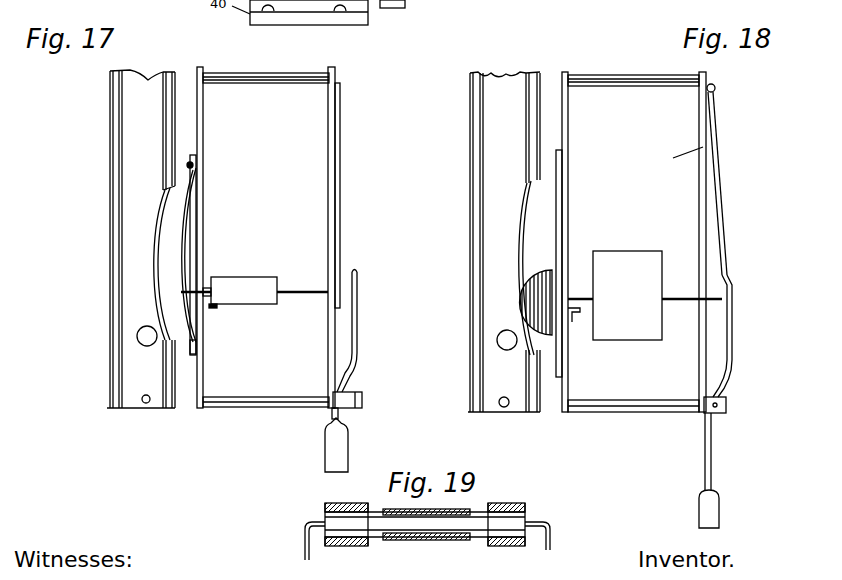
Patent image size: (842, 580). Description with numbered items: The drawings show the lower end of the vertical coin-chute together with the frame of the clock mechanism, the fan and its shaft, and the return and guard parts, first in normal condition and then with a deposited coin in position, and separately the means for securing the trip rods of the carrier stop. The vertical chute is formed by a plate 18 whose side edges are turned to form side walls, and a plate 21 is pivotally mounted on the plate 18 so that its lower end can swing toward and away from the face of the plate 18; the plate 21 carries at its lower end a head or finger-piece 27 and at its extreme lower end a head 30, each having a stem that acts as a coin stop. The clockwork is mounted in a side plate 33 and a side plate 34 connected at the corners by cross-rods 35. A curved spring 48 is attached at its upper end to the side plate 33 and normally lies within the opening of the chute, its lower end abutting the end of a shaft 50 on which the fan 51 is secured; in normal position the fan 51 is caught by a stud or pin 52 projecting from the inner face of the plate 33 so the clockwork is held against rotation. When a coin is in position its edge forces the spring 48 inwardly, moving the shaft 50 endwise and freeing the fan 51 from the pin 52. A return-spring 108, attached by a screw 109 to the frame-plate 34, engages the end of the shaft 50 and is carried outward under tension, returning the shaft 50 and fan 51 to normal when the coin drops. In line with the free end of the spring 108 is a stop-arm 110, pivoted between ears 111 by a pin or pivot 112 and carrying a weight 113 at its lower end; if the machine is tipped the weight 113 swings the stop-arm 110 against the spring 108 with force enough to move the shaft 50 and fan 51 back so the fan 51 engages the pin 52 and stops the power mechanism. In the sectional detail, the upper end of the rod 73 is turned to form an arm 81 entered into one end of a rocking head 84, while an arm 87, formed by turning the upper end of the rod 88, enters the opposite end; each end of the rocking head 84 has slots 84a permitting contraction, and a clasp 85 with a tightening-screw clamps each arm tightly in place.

In FIG. 17, the plate 18 is at (113, 190).
In FIG. 18, the plate 18 is at (473, 178).
In FIG. 17, the plate 21 is at (149, 264).
In FIG. 18, the plate 21 is at (523, 265).
In FIG. 17, the spring 48 is at (177, 258).
In FIG. 17, the head or finger-piece 27 is at (145, 328).
In FIG. 18, the head or finger-piece 27 is at (506, 332).
In FIG. 17, the head 30 is at (142, 391).
In FIG. 18, the head 30 is at (501, 394).
In FIG. 17, the side plate 33 is at (199, 357).
In FIG. 18, the side plate 33 is at (571, 242).
In FIG. 17, the side plate 34 is at (329, 344).
In FIG. 18, the side plate 34 is at (700, 200).
In FIG. 17, the cross-rods 35 is at (282, 383).
In FIG. 18, the cross-rods 35 is at (612, 80).
In FIG. 17, the shaft 50 is at (302, 289).
In FIG. 18, the shaft 50 is at (645, 289).
In FIG. 17, the fan 51 is at (244, 290).
In FIG. 18, the fan 51 is at (627, 295).
In FIG. 17, the stud or pin 52 is at (215, 309).
In FIG. 18, the stud or pin 52 is at (578, 322).
In FIG. 17, the spring 108 is at (340, 184).
In FIG. 18, the spring 108 is at (718, 188).
In FIG. 18, the screw 109 is at (718, 90).
In FIG. 18, the stop-arm 110 is at (732, 328).
In FIG. 18, the ears 111 is at (728, 401).
In FIG. 18, the pin or pivot 112 is at (720, 413).
In FIG. 18, the weight 113 is at (719, 506).
In FIG. 19, the rod 73 is at (563, 548).
In FIG. 19, the arm 81 is at (527, 520).
In FIG. 19, the rocking head 84 is at (430, 541).
In FIG. 19, the slots 84a is at (352, 503).
In FIG. 19, the clasp 85 is at (357, 542).
In FIG. 19, the arm 87 is at (323, 512).
In FIG. 19, the rod 88 is at (296, 547).